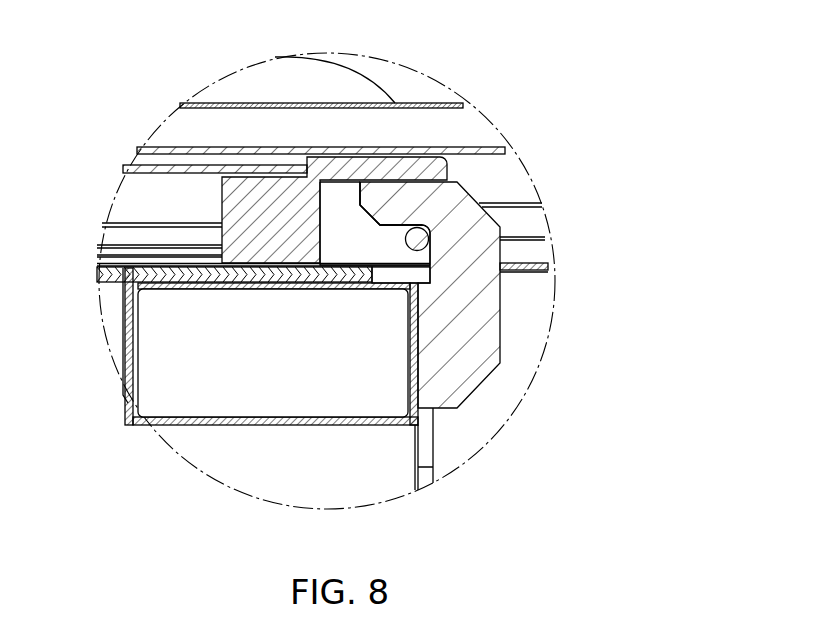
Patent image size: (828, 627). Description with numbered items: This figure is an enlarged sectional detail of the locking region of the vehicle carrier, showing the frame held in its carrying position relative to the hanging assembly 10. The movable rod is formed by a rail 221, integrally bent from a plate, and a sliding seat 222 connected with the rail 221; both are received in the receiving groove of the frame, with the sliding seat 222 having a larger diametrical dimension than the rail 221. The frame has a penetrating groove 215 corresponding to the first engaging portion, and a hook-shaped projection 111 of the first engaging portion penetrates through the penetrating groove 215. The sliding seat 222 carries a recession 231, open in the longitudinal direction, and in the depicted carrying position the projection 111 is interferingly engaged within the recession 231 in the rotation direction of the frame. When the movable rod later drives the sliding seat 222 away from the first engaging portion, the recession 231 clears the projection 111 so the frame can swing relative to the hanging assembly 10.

The hanging assembly 10 is at (215, 422).
The projection 111 is at (417, 212).
The penetrating groove 215 is at (380, 230).
The rail 221 is at (167, 168).
The sliding seat 222 is at (257, 193).
The recession 231 is at (400, 252).